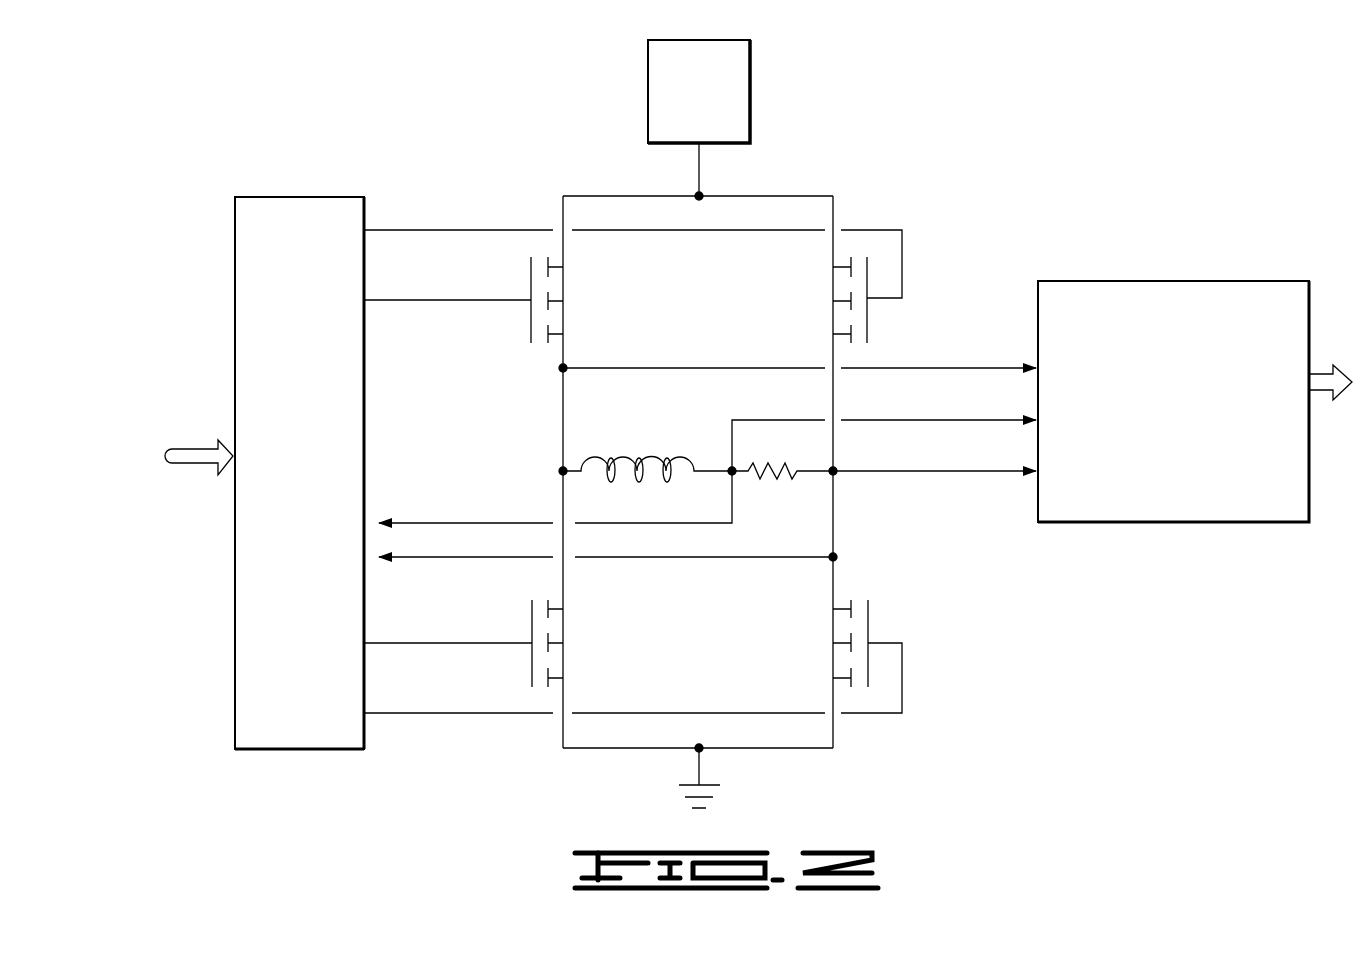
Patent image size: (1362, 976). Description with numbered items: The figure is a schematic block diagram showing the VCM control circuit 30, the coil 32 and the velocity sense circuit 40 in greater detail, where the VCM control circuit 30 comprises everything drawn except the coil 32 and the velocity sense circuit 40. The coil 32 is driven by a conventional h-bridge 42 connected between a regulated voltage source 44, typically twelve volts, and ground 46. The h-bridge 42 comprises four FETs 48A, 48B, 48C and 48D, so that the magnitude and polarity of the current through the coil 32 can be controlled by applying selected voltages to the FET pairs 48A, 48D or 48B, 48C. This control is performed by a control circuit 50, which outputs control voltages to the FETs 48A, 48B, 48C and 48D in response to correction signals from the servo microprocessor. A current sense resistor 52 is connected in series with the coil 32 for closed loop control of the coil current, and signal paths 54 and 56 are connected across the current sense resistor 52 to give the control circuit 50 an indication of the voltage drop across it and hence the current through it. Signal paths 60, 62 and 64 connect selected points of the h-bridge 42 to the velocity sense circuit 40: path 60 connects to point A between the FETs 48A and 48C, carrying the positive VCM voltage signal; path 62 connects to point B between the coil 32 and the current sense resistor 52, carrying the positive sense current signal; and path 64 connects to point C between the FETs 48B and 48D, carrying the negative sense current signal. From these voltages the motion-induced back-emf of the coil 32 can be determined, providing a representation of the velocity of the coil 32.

The VCM control circuit 30 is at (380, 160).
The coil 32 is at (648, 455).
The velocity sense circuit 40 is at (1110, 292).
The h-bridge 42 is at (582, 148).
The regulated voltage source 44 is at (738, 97).
The ground 46 is at (708, 782).
The FET 48A is at (530, 282).
The FET 48B is at (869, 318).
The FET 48C is at (531, 617).
The FET 48D is at (870, 612).
The control circuit 50 is at (288, 722).
The current sense resistor 52 is at (763, 475).
The signal path 54 is at (650, 525).
The signal path 56 is at (672, 560).
The signal path 60 is at (893, 370).
The signal path 62 is at (893, 421).
The signal path 64 is at (893, 473).